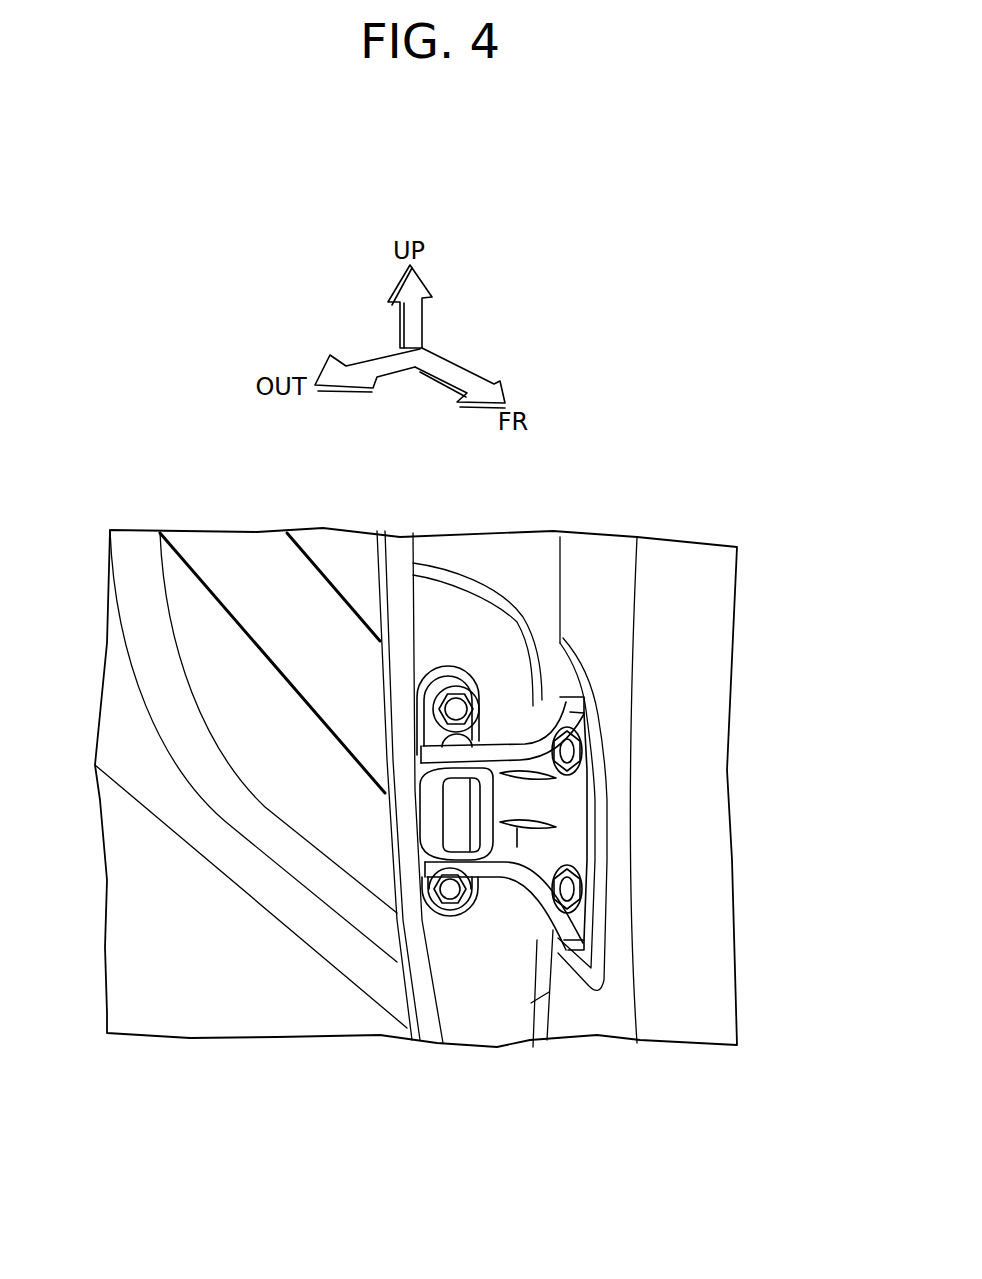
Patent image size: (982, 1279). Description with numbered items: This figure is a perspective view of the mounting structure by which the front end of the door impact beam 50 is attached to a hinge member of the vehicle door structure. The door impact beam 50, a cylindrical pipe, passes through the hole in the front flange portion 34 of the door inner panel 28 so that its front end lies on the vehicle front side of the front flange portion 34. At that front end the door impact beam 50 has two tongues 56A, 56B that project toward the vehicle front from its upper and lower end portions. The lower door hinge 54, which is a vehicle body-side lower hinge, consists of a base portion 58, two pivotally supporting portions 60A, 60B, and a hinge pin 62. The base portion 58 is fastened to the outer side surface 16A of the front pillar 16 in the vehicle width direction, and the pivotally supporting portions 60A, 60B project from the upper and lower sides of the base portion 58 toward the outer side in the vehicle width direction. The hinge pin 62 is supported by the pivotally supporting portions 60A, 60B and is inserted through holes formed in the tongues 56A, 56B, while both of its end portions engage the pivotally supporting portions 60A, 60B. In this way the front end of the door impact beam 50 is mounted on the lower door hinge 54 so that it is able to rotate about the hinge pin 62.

The front pillar 16 is at (692, 805).
The outer side surface 16A is at (612, 1020).
The door inner panel 28 is at (300, 933).
The front flange portion 34 is at (405, 1030).
The door impact beam 50 is at (295, 692).
The lower door hinge 54 is at (590, 835).
The tongue 56A is at (420, 760).
The tongue 56B is at (437, 833).
The base portion 58 is at (590, 792).
The pivotally supporting portion 60A is at (490, 742).
The pivotally supporting portion 60B is at (483, 868).
The hinge pin 62 is at (455, 812).